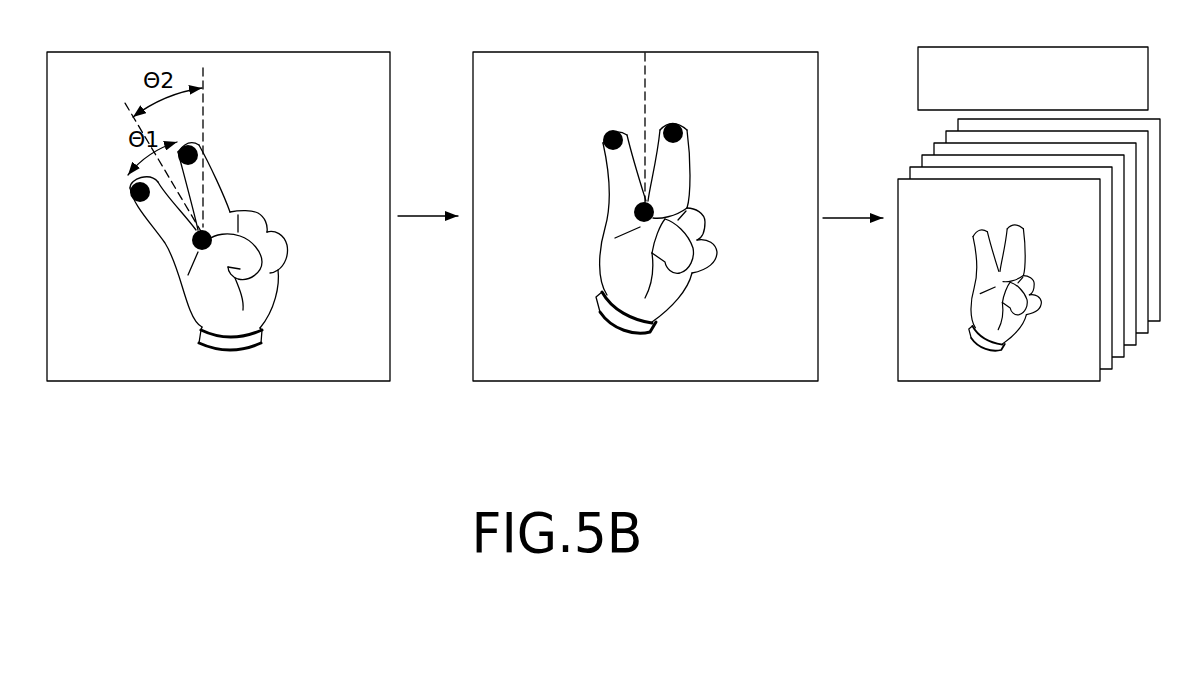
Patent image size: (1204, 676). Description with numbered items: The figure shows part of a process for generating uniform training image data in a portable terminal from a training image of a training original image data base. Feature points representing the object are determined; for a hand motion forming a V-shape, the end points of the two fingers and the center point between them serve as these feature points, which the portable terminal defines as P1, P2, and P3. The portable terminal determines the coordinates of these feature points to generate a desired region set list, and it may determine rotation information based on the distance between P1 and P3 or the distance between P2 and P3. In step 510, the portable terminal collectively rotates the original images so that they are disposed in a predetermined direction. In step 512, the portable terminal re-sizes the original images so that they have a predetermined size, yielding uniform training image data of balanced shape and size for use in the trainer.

The feature point P1 is at (131, 191).
The feature point P2 is at (190, 140).
The feature point P3 is at (212, 228).
The step of collectively rotating original images 510 is at (645, 382).
The step of re-sizing original images 512 is at (1000, 382).